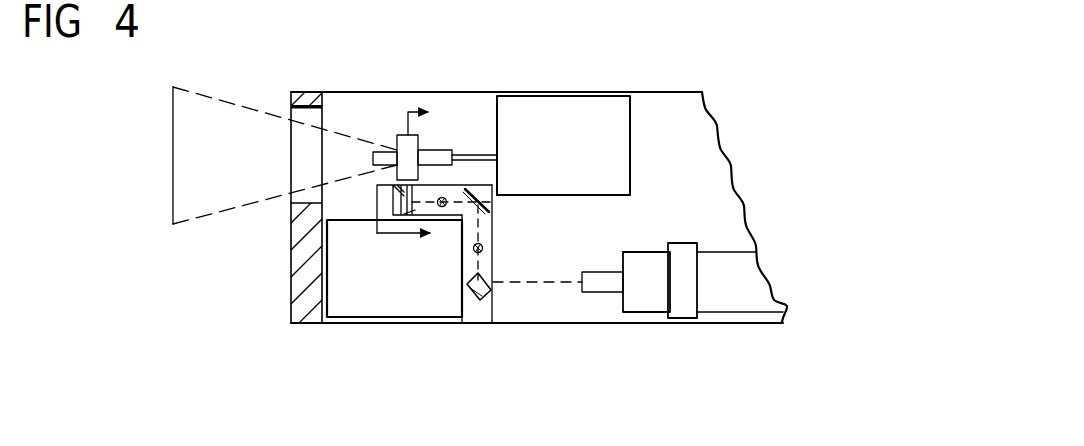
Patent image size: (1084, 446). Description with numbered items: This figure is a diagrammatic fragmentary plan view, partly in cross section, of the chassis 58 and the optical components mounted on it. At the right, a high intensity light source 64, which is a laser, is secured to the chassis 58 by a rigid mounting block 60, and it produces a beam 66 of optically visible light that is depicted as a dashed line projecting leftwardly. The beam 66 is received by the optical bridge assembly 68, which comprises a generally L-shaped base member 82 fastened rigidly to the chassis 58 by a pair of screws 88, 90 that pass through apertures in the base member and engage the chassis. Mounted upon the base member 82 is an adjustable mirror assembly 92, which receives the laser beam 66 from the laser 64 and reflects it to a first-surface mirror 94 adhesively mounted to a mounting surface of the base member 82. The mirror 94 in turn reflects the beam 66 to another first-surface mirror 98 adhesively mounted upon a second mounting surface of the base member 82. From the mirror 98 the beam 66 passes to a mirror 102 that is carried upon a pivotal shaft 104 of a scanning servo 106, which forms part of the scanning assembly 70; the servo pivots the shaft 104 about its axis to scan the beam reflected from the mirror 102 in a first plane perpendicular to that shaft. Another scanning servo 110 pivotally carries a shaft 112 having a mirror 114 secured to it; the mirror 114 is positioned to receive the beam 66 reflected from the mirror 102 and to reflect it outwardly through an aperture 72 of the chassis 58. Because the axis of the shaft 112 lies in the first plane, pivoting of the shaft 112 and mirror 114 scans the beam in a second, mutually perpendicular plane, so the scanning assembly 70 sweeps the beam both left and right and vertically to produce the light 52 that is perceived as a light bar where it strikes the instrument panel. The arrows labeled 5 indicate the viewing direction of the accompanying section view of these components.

The section line of FIG. 5 is at (413, 174).
The light 52 is at (201, 226).
The chassis 58 is at (534, 314).
The mounting block 60 is at (683, 316).
The high intensity light source 64 is at (712, 305).
The beam 66 is at (563, 283).
The optical bridge assembly 68 is at (496, 237).
The scanning assembly 70 is at (542, 72).
The aperture 72 is at (296, 203).
The base member 82 is at (493, 216).
The screw 88 is at (446, 196).
The screw 90 is at (483, 250).
The adjustable mirror assembly 92 is at (473, 305).
The first-surface mirror 94 is at (498, 184).
The first-surface mirror 98 is at (416, 211).
The mirror 102 is at (437, 155).
The pivotal shaft 104 is at (478, 152).
The scanning servo 106 is at (608, 133).
The scanning servo 110 is at (372, 307).
The shaft 112 is at (393, 200).
The mirror 114 is at (405, 157).